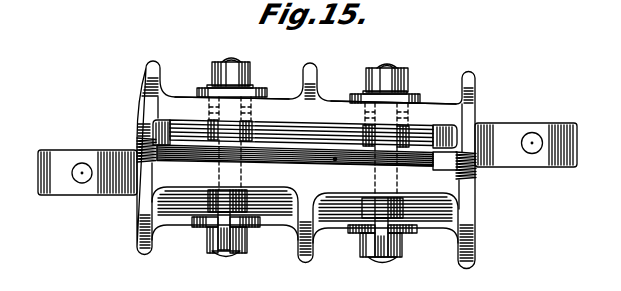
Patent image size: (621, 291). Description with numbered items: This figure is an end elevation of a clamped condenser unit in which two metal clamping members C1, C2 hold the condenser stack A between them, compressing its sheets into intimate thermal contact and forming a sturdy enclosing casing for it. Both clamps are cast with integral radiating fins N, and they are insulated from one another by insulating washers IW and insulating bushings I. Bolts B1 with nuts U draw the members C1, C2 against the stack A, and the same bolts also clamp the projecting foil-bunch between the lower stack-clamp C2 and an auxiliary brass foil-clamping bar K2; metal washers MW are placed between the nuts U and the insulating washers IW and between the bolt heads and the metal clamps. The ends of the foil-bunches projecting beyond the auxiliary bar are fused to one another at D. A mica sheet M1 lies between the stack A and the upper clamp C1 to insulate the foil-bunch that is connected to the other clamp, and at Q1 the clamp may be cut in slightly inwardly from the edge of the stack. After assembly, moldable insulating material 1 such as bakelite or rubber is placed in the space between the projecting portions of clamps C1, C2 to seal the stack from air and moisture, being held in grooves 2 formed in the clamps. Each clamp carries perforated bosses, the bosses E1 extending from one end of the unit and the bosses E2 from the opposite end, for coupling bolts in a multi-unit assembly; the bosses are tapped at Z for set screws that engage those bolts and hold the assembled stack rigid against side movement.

The radiating fins N is at (153, 60).
The clamping member C1 is at (323, 104).
The clamping member C2 is at (435, 191).
The insulating bushing I is at (254, 132).
The auxiliary foil-clamping bar K2 is at (289, 148).
The metal washer MW is at (203, 84).
The nut U is at (246, 70).
The bolt B1 is at (233, 58).
The insulating washer IW is at (202, 88).
The condenser stack A is at (336, 158).
The cut-in portion of clamp Q1 is at (143, 140).
The groove 2 is at (137, 113).
The moldable insulating material 1 is at (135, 147).
The mica sheet M1 is at (140, 143).
The boss E2 is at (40, 150).
The boss E1 is at (572, 126).
The tapped hole Z is at (81, 176).
The fused ends of foil-bunches D is at (440, 172).